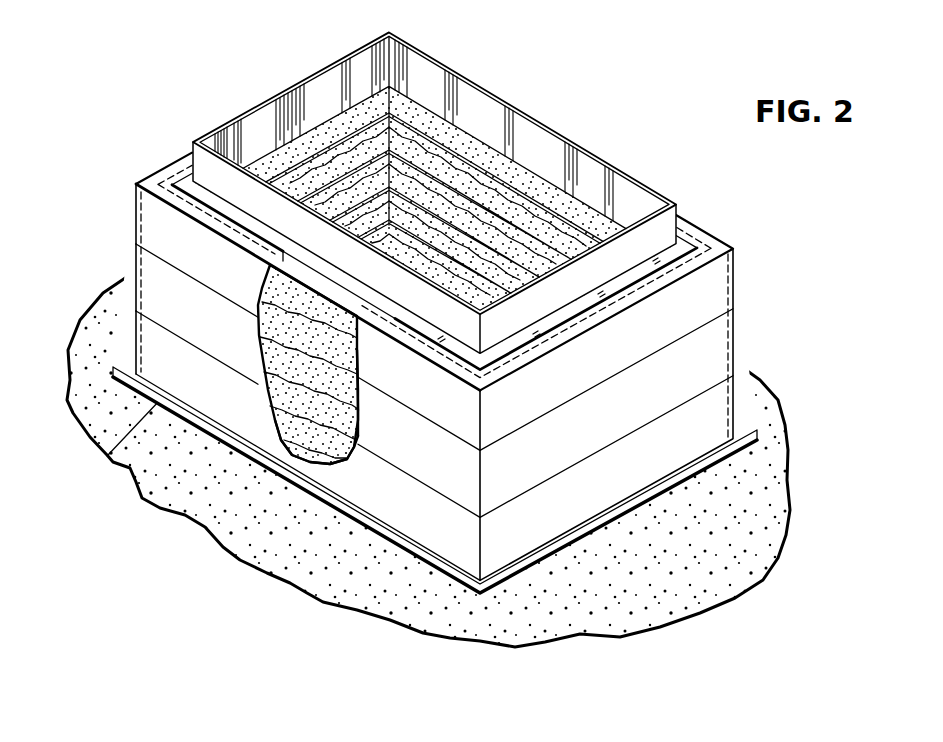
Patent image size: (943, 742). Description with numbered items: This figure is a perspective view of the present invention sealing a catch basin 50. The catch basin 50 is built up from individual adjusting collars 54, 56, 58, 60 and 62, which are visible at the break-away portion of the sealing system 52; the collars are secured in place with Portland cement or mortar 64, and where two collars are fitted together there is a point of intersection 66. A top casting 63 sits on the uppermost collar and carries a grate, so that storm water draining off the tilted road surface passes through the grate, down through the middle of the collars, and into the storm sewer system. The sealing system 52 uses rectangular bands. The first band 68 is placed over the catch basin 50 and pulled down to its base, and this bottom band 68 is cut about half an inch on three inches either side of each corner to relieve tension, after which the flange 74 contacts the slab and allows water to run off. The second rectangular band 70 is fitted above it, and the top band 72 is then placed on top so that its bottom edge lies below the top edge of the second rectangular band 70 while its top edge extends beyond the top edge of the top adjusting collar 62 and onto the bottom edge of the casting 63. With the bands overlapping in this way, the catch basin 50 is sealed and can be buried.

The catch basin 50 is at (428, 313).
The sealing system 52 is at (262, 443).
The adjusting collar 54 is at (278, 424).
The adjusting collar 56 is at (350, 442).
The adjusting collar 58 is at (363, 432).
The adjusting collar 60 is at (357, 393).
The top adjusting collar 62 is at (358, 322).
The top casting 63 is at (210, 163).
The Portland cement or mortar 64 is at (273, 342).
The point of intersection 66 is at (270, 393).
The first band 68 is at (157, 345).
The second rectangular band 70 is at (155, 265).
The top band 72 is at (147, 212).
The flange 74 is at (110, 455).